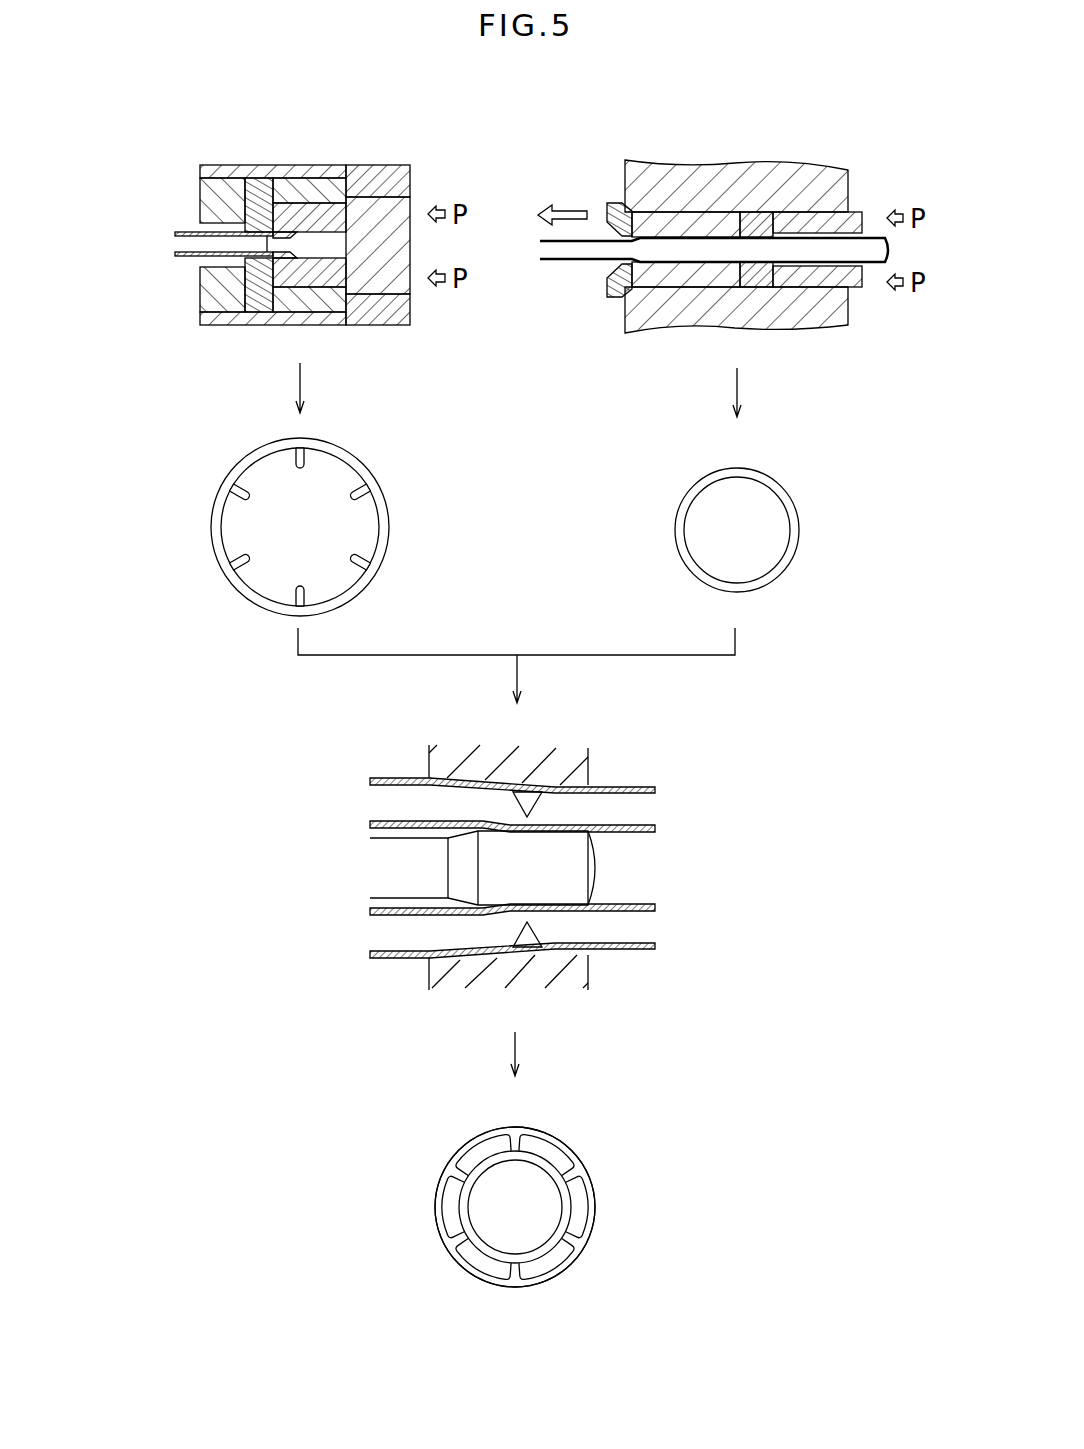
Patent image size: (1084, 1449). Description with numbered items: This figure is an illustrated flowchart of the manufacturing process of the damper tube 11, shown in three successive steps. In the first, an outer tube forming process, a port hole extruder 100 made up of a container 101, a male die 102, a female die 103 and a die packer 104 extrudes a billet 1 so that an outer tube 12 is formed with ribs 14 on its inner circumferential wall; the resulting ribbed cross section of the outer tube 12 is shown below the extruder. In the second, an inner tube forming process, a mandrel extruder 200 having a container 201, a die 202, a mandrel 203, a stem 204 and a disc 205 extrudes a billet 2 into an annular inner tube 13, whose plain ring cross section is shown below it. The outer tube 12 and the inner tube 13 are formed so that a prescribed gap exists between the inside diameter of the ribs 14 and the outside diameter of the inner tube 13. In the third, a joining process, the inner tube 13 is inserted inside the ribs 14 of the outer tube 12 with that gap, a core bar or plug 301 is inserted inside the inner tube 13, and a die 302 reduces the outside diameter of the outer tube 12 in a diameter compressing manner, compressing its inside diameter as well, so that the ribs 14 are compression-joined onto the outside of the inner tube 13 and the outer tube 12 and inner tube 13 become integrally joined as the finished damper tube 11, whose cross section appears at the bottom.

The port hole extruder 100 is at (303, 143).
The container 101 is at (405, 225).
The male die 102 is at (330, 180).
The female die 103 is at (258, 185).
The die packer 104 is at (200, 295).
The billet 1 is at (400, 272).
The outer tube 12 is at (432, 733).
The inner tube 13 is at (566, 252).
The ribs 14 is at (236, 499).
The mandrel extruder 200 is at (745, 228).
The container 201 is at (652, 170).
The billet 2 is at (665, 330).
The die 202 is at (612, 287).
The mandrel 203 is at (872, 240).
The stem 204 is at (835, 280).
The disc 205 is at (757, 210).
The core bar 301 is at (578, 873).
The die 302 is at (588, 768).
The damper tube 11 is at (545, 1129).